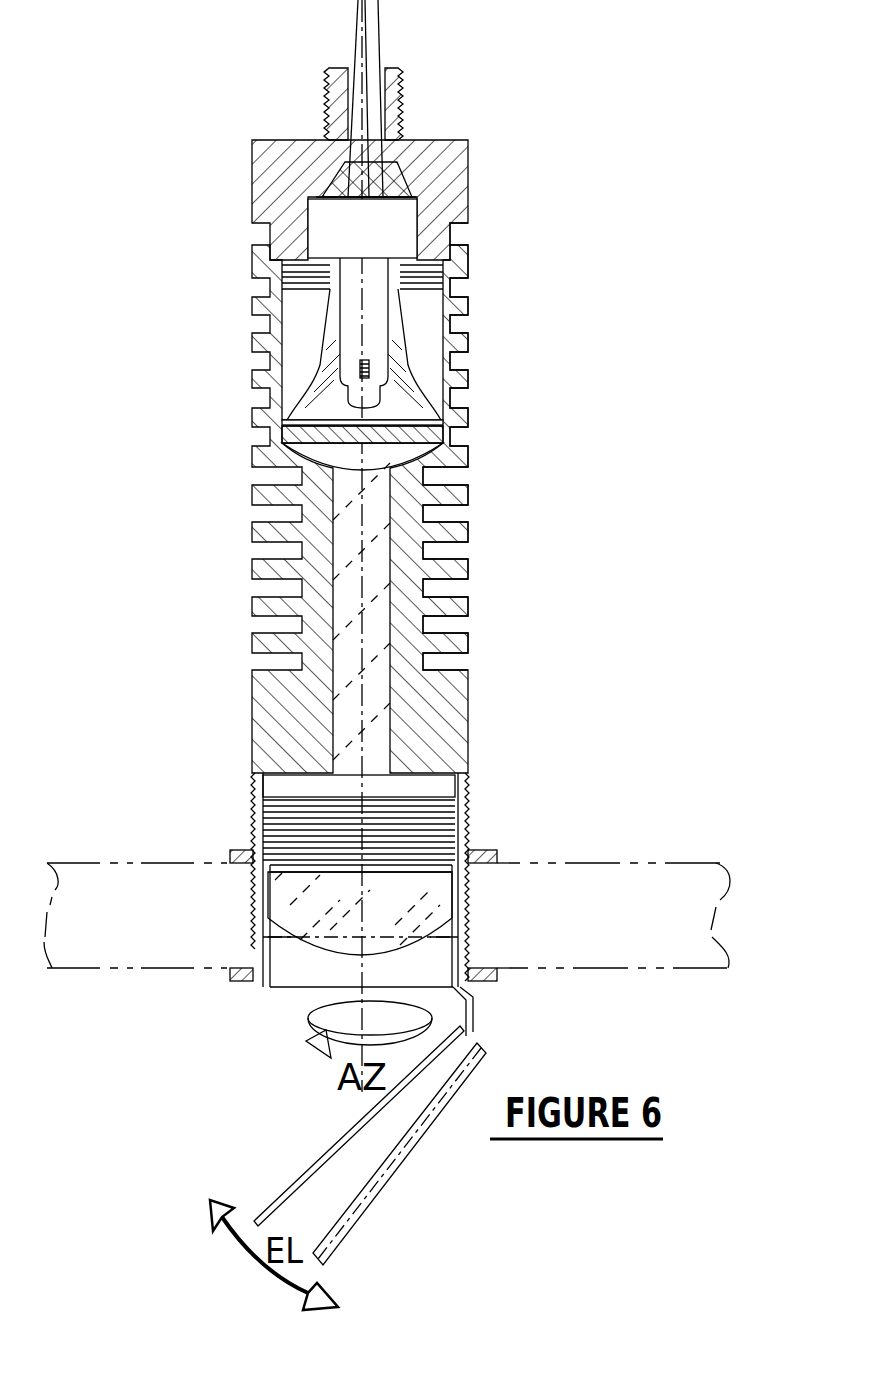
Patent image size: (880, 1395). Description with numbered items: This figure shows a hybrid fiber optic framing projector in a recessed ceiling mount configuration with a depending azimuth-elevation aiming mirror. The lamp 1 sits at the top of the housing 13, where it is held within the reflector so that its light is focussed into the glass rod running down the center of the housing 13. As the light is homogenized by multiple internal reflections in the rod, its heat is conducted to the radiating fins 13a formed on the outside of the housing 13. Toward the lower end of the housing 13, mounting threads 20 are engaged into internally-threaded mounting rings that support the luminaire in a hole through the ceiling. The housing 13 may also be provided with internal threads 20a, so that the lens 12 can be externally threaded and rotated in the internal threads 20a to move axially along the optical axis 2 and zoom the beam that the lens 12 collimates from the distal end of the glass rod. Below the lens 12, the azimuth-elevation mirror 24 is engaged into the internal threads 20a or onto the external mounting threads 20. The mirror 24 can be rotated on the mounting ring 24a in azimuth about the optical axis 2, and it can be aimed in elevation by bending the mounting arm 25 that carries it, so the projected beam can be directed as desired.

The lamp 1 is at (414, 386).
The housing 13 is at (474, 705).
The radiating fins 13a is at (470, 602).
The mounting threads 20 is at (424, 879).
The internal threads 20a is at (417, 815).
The optical axis 2 is at (365, 978).
The lens 12 is at (287, 975).
The mounting ring 24a is at (273, 980).
The mounting arm 25 is at (478, 1012).
The azimuth-elevation mirror 24 is at (370, 1130).